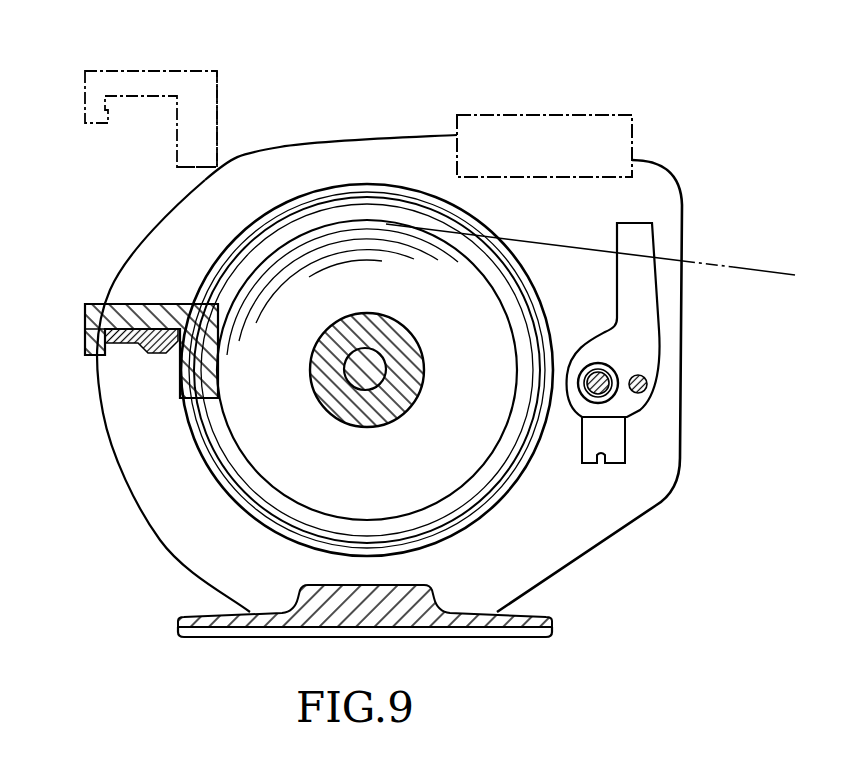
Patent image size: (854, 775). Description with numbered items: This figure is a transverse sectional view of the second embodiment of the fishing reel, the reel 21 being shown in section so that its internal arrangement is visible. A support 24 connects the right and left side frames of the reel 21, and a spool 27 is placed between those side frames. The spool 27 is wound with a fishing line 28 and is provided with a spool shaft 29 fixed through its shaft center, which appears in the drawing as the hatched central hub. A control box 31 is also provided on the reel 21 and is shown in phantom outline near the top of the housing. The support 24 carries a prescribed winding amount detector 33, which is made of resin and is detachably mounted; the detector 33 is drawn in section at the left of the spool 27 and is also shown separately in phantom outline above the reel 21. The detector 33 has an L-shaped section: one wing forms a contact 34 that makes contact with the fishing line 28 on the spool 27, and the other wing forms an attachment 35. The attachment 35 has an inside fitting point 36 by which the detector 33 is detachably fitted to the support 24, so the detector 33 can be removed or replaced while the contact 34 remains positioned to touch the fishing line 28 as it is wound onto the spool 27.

The reel 21 is at (322, 136).
The support 24 is at (103, 362).
The spool 27 is at (483, 427).
The fishing line 28 is at (733, 262).
The spool shaft 29 is at (378, 373).
The control box 31 is at (530, 125).
The prescribed winding amount detector 33 is at (133, 294).
The contact 34 is at (205, 352).
The attachment 35 is at (125, 318).
The inside fitting point 36 is at (137, 343).